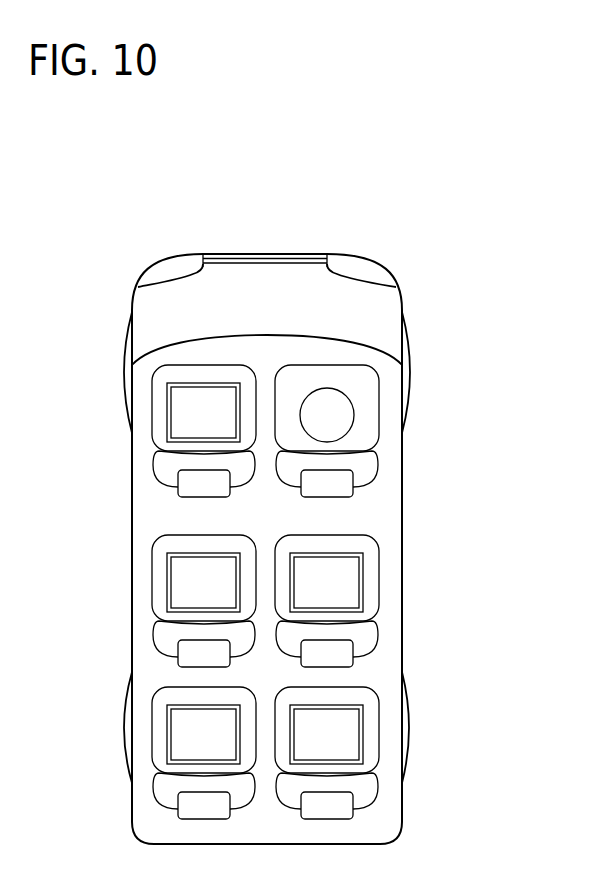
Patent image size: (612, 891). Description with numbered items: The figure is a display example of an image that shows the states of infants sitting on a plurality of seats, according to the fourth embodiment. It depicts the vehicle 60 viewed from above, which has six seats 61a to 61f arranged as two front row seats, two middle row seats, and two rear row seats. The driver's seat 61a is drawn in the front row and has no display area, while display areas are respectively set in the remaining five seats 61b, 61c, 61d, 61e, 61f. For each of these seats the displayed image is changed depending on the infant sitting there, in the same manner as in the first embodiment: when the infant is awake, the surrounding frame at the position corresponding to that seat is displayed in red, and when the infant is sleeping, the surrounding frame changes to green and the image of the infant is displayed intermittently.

The vehicle 60 is at (131, 308).
The driver's seat 61a is at (353, 405).
The seat 61b is at (167, 393).
The seat 61c is at (363, 574).
The seat 61d is at (167, 560).
The seat 61e is at (363, 727).
The seat 61f is at (167, 713).